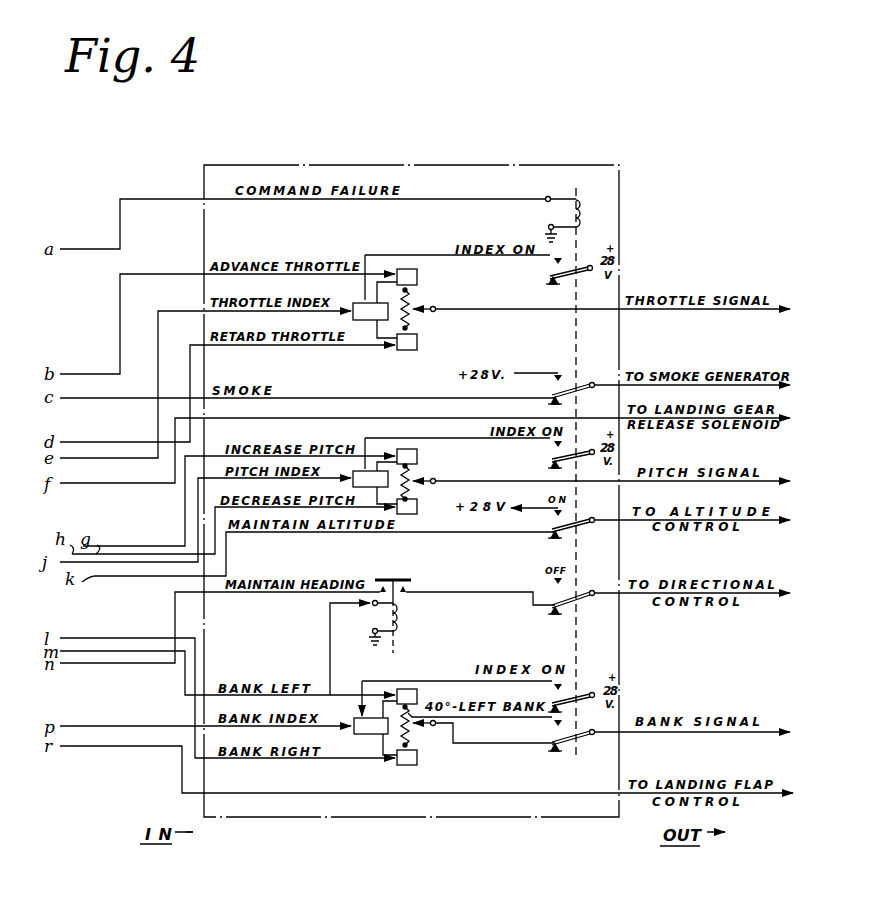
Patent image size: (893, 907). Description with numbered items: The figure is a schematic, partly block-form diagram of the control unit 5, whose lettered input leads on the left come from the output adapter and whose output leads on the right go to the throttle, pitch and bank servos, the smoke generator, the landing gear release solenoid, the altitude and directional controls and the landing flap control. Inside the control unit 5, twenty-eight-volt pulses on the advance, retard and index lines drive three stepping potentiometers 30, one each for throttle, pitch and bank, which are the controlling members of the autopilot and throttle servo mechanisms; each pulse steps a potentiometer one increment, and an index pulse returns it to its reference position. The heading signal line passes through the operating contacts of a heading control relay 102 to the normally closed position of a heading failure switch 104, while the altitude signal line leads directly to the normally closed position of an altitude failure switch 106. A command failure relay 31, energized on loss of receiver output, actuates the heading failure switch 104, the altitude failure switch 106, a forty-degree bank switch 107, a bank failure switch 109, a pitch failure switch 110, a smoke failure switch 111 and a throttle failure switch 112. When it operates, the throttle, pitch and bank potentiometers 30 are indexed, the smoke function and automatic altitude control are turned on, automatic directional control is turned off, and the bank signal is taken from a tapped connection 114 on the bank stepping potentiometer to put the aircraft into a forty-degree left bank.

The control unit 5 is at (550, 822).
The stepping potentiometers 30 is at (410, 746).
The command failure relay 31 is at (578, 199).
The heading control relay 102 is at (401, 600).
The heading failure switch 104 is at (566, 607).
The altitude failure switch 106 is at (550, 529).
The 40-degree bank switch 107 is at (558, 739).
The bank failure switch 109 is at (565, 703).
The pitch failure switch 110 is at (550, 459).
The smoke failure switch 111 is at (549, 392).
The throttle failure switch 112 is at (548, 276).
The tapped connection 114 is at (413, 712).